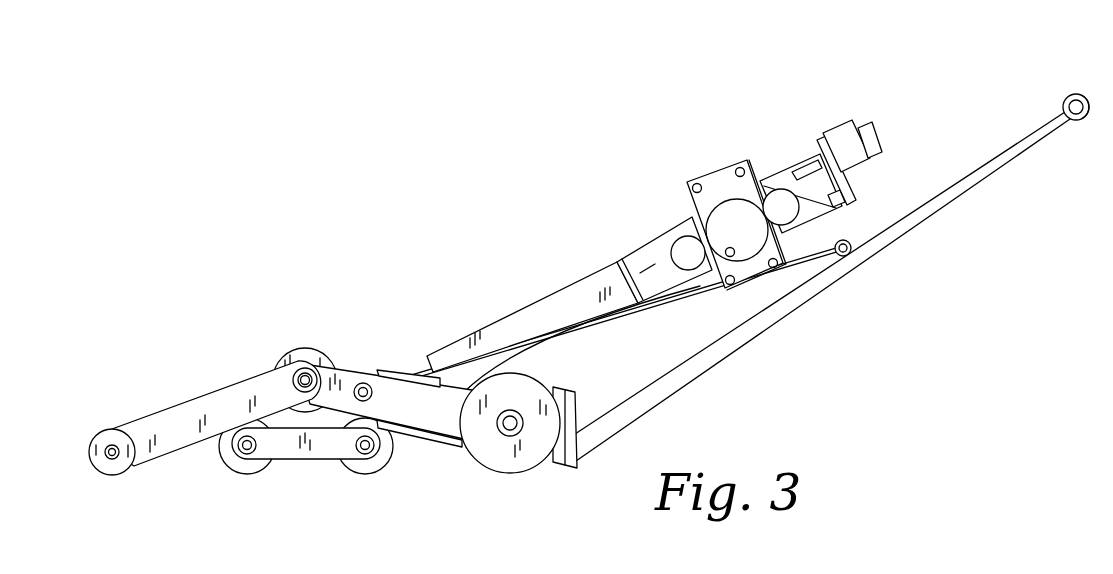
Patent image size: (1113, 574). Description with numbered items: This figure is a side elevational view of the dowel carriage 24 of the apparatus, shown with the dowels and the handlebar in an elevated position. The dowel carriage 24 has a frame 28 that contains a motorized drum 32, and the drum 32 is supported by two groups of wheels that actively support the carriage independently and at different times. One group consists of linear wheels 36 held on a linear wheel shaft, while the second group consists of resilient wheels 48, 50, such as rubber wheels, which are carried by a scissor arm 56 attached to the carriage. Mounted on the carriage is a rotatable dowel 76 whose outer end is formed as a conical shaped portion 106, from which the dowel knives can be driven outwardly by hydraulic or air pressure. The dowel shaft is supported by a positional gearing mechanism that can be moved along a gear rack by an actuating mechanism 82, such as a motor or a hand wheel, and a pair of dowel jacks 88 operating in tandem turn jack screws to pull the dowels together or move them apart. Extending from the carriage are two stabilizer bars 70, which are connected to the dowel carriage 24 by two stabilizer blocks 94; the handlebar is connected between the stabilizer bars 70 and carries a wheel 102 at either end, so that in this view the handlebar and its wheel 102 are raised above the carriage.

The dowel carriage 24 is at (480, 216).
The frame 28 is at (355, 358).
The motorized drum 32 is at (310, 347).
The linear wheel 36 is at (232, 474).
The resilient wheel 48 is at (113, 477).
The resilient wheel 50 is at (515, 472).
The scissor arm 56 is at (208, 383).
The stabilizer bar 70 is at (957, 197).
The rotatable dowel 76 is at (622, 231).
The actuating mechanism 82 is at (728, 200).
The dowel jack 88 is at (678, 238).
The stabilizer block 94 is at (434, 441).
The wheel 102 is at (1077, 93).
The conical shaped portion 106 is at (532, 313).